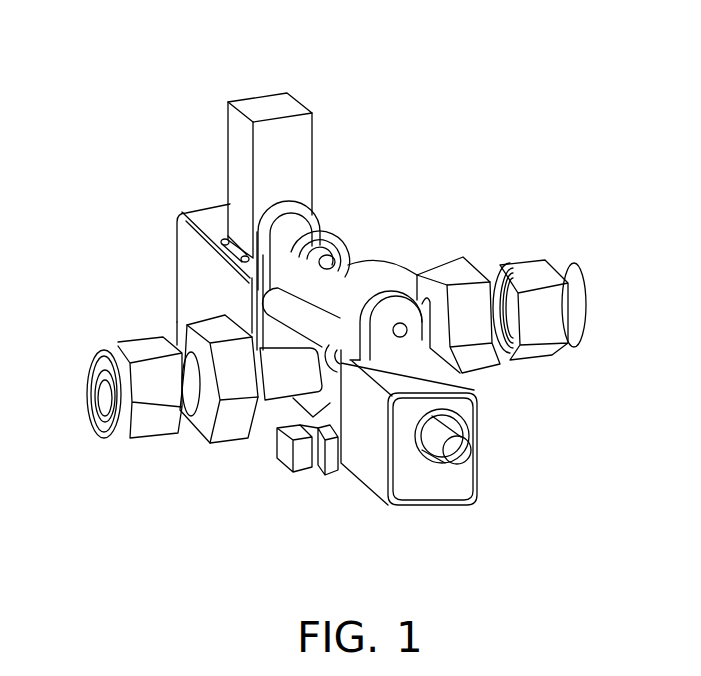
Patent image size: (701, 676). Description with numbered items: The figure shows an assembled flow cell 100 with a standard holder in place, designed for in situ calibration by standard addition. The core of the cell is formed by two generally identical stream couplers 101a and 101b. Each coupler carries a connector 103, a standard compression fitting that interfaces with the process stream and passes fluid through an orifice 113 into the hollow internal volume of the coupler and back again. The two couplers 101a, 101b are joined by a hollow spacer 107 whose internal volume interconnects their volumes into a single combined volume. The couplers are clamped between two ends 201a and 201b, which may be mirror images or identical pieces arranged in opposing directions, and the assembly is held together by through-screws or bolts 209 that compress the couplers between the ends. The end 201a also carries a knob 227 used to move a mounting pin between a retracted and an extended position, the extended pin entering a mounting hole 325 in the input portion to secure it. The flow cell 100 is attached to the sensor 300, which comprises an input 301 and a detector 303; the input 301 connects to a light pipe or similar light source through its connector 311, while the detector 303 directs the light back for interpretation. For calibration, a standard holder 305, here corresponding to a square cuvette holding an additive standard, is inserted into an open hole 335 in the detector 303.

The flow cell 100 is at (328, 69).
The first stream coupler 101a is at (193, 340).
The second stream coupler 101b is at (487, 368).
The connector 103 is at (107, 381).
The hollow spacer 107 is at (278, 300).
The orifice 113 is at (97, 437).
The first end 201a is at (290, 457).
The second end 201b is at (310, 227).
The through-screws or bolts 209 is at (195, 270).
The knob 227 is at (340, 247).
The sensor 300 is at (200, 211).
The input 301 is at (430, 492).
The detector 303 is at (190, 302).
The standard holder 305 is at (312, 117).
The connector 311 is at (478, 470).
The mounting hole 325 is at (398, 290).
The hole 335 is at (197, 232).